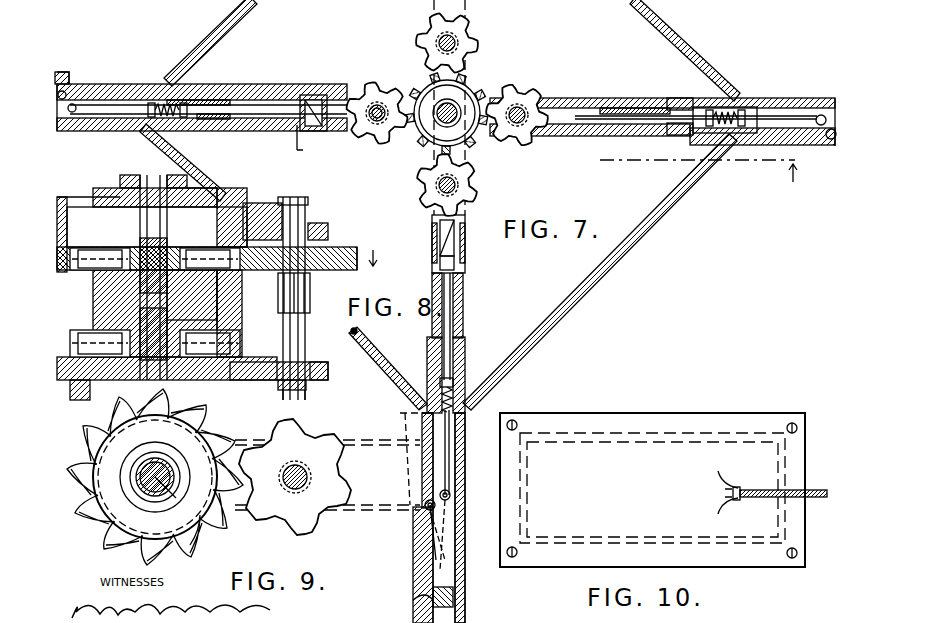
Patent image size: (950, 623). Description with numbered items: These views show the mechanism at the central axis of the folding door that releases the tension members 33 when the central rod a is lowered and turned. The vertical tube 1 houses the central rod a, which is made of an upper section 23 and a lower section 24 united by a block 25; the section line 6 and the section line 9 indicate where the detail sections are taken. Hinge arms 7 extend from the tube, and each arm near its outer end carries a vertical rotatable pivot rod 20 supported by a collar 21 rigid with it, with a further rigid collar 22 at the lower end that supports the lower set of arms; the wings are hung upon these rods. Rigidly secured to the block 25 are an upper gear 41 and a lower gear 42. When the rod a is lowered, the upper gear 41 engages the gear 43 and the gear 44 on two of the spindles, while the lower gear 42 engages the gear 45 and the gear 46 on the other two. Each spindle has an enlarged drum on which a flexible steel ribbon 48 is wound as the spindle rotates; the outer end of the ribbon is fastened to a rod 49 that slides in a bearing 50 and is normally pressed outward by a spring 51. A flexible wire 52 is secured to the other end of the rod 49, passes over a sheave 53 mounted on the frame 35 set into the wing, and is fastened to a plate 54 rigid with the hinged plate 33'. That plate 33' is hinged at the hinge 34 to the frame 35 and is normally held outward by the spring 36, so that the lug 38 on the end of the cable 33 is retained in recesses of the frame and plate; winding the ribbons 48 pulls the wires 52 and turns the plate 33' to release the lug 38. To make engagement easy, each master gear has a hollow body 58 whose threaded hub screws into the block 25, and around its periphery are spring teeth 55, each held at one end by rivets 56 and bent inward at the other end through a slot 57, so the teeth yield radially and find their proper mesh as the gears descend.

In FIG. 8, the tube 1 is at (185, 184).
In FIG. 7, the section line 6 is at (543, 163).
In FIG. 8, the arm 7 is at (255, 207).
In FIG. 8, the section line 9 is at (222, 262).
In FIG. 7, the pivot rod 20 is at (373, 119).
In FIG. 8, the pivot rod 20 is at (305, 336).
In FIG. 8, the collar 21 is at (306, 222).
In FIG. 8, the collar 22 is at (307, 387).
In FIG. 8, the upper section 23 is at (165, 228).
In FIG. 8, the lower section 24 is at (240, 350).
In FIG. 7, the block 25 is at (462, 128).
In FIG. 8, the block 25 is at (217, 303).
In FIG. 9, the block 25 is at (135, 492).
In FIG. 7, the tension member 33 is at (440, 205).
In FIG. 7, the plate 33' is at (396, 592).
In FIG. 7, the hinge 34 is at (430, 505).
In FIG. 7, the frame 35 is at (461, 470).
In FIG. 7, the spring 36 is at (455, 596).
In FIG. 7, the lug 38 is at (405, 416).
In FIG. 7, the upper gear 41 is at (413, 143).
In FIG. 8, the upper gear 41 is at (110, 256).
In FIG. 9, the upper gear 41 is at (203, 546).
In FIG. 8, the lower gear 42 is at (90, 340).
In FIG. 7, the gear 43 is at (376, 82).
In FIG. 7, the gear 44 is at (532, 94).
In FIG. 8, the gear 44 is at (322, 249).
In FIG. 9, the gear 44 is at (312, 442).
In FIG. 7, the gear 45 is at (478, 33).
In FIG. 7, the gear 46 is at (470, 198).
In FIG. 7, the flexible steel ribbon 48 is at (318, 95).
In FIG. 7, the rod 49 is at (246, 109).
In FIG. 7, the bearing 50 is at (465, 382).
In FIG. 7, the spring 51 is at (470, 403).
In FIG. 7, the flexible wire 52 is at (452, 440).
In FIG. 7, the sheave 53 is at (450, 496).
In FIG. 7, the plate 54 is at (443, 560).
In FIG. 8, the spring teeth 55 is at (240, 338).
In FIG. 9, the spring teeth 55 is at (160, 500).
In FIG. 9, the rivets 56 is at (150, 500).
In FIG. 9, the slot 57 is at (155, 507).
In FIG. 8, the hollow body 58 is at (98, 282).
In FIG. 9, the hollow body 58 is at (98, 505).
In FIG. 7, the central rod a is at (452, 108).